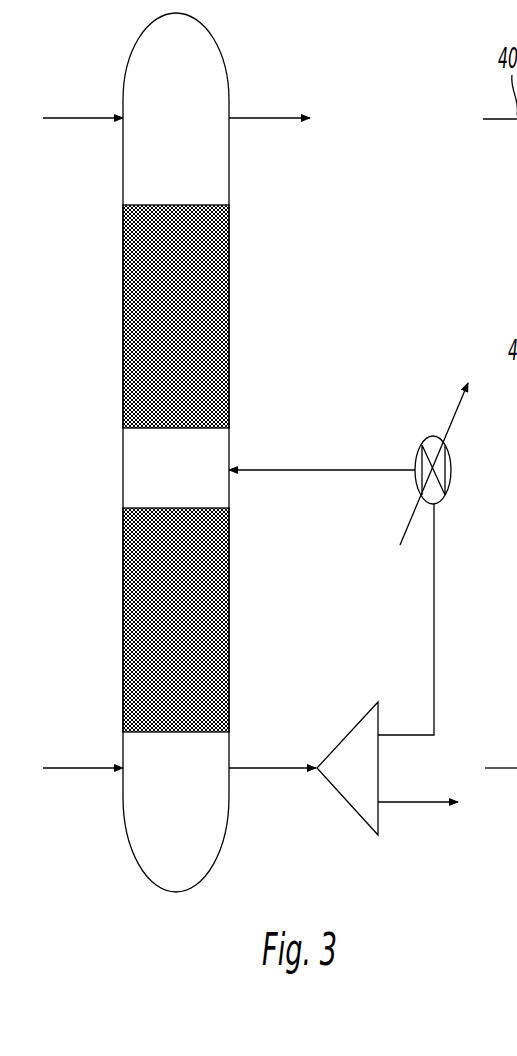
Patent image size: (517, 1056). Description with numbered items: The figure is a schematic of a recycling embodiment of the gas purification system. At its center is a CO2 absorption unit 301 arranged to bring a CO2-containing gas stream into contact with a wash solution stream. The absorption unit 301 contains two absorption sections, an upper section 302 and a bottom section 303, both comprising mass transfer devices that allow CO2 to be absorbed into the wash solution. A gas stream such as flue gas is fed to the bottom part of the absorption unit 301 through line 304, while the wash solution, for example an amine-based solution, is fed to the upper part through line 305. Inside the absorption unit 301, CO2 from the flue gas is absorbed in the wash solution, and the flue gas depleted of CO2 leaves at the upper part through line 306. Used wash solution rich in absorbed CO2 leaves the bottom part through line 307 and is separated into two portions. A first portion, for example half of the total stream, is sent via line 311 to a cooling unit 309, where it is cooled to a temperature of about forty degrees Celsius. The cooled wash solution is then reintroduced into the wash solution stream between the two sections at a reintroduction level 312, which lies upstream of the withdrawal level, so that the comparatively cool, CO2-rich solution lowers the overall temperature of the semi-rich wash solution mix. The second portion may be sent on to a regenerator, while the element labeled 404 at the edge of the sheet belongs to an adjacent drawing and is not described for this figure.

The CO2 absorption unit 301 is at (225, 62).
The upper section 302 is at (226, 338).
The bottom section 303 is at (228, 610).
The line 304 is at (80, 773).
The line 305 is at (78, 113).
The line 306 is at (267, 125).
The line 307 is at (270, 765).
The cooling unit 309 is at (432, 435).
The line 311 is at (398, 733).
The reintroduction level 312 is at (287, 468).
The stream (adjacent figure) 404 is at (516, 783).